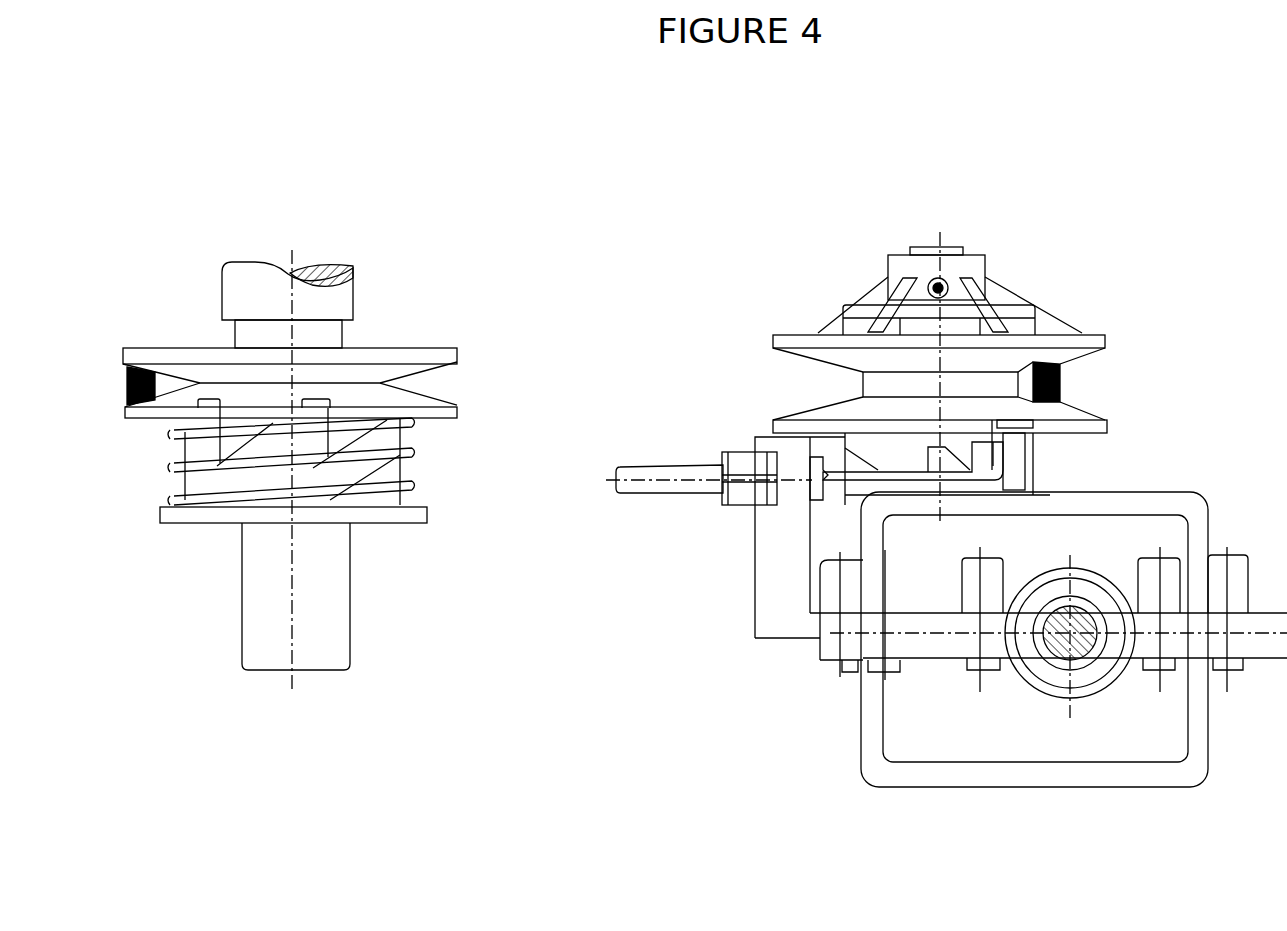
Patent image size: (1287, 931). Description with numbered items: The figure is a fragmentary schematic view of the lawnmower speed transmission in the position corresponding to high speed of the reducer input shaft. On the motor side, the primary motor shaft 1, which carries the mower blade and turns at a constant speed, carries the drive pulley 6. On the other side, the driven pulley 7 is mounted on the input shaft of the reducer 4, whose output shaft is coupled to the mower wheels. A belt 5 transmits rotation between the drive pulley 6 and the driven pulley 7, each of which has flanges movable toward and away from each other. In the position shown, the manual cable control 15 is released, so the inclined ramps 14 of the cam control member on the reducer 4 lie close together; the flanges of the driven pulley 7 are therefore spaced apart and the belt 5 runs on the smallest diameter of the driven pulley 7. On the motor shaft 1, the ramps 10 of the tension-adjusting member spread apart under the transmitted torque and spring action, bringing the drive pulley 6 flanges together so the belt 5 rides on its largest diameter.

The primary motor shaft 1 is at (352, 652).
The reducer 4 is at (1203, 497).
The belt 5 is at (125, 405).
The drive pulley 6 is at (130, 398).
The driven pulley 7 is at (1092, 416).
The ramps 10 is at (413, 481).
The inclined ramps 14 is at (888, 450).
The manual cable control 15 is at (843, 472).